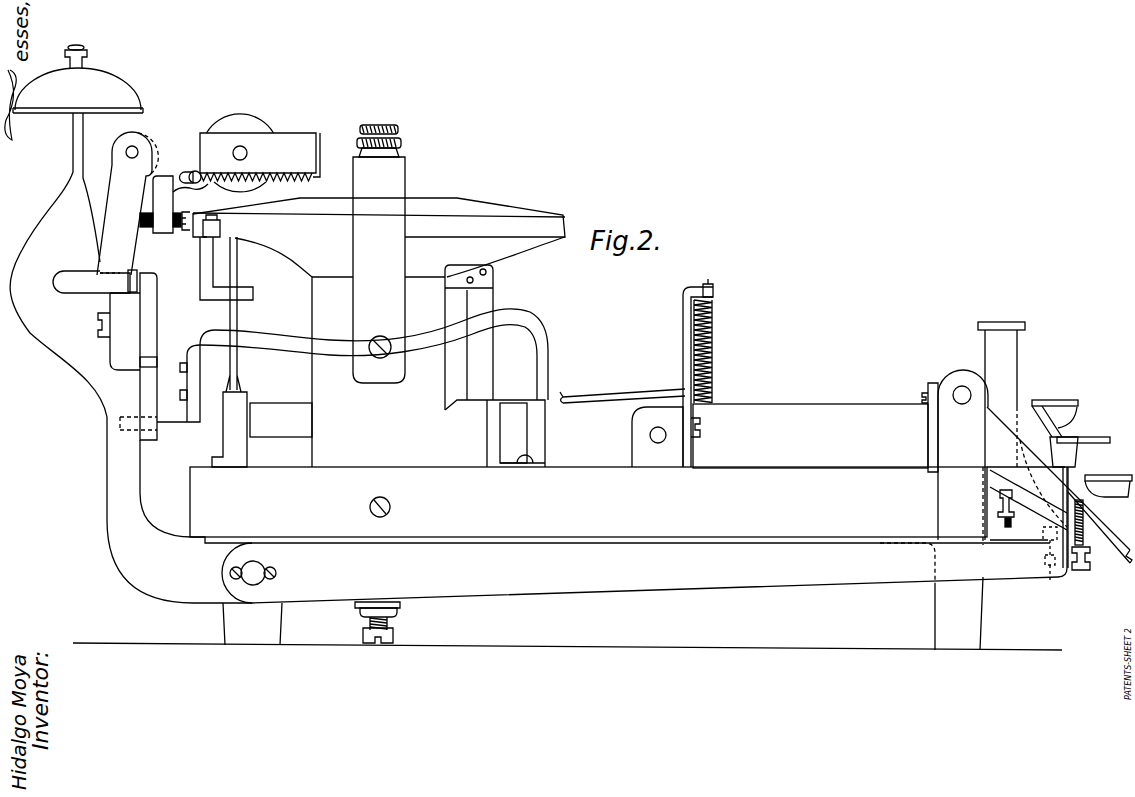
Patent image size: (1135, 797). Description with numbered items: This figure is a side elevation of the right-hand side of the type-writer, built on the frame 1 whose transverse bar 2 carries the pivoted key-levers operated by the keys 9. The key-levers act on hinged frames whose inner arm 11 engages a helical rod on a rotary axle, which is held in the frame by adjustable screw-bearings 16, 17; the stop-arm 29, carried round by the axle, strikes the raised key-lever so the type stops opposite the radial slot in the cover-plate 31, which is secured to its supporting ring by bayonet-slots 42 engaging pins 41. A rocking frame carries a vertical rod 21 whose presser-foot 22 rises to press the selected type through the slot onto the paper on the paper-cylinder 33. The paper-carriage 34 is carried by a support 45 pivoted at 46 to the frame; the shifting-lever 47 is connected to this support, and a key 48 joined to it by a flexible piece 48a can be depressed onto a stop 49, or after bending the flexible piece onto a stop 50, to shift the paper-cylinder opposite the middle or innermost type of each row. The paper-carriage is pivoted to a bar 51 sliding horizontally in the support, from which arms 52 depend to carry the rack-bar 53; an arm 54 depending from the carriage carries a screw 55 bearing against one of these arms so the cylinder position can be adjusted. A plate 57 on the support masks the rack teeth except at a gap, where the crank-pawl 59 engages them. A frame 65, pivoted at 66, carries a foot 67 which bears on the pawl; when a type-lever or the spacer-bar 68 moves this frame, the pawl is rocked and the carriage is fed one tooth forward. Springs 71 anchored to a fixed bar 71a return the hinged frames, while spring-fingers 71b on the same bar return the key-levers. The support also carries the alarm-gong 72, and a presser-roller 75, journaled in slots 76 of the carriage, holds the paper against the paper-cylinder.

The frame 1 is at (588, 502).
The transverse bar 2 is at (657, 427).
The keys 9 is at (1000, 326).
The arm 11 is at (478, 302).
The adjustable screw-bearing 16 is at (381, 607).
The adjustable screw-bearing 17 is at (382, 125).
The vertical rod 21 is at (239, 374).
The presser-foot 22 is at (240, 245).
The stop-arm 29 is at (280, 412).
The cover-plate 31 is at (538, 220).
The paper-cylinder 33 is at (250, 122).
The paper-carriage 34 is at (286, 148).
The pins 41 is at (186, 230).
The bayonet-slots 42 is at (221, 230).
The support 45 is at (147, 547).
The pivot 46 is at (257, 568).
The shifting-lever 47 is at (644, 558).
The key 48 is at (1090, 437).
The flexible piece 48a is at (996, 503).
The stop 49 is at (1088, 562).
The stop 50 is at (1050, 580).
The bar 51 is at (135, 148).
The arms 52 is at (112, 197).
The rack-bar 53 is at (110, 278).
The arm 54 is at (166, 215).
The screw 55 is at (147, 228).
The plate 57 is at (139, 281).
The crank-pawl 59 is at (158, 315).
The frame 65 is at (525, 324).
The pivot 66 is at (380, 358).
The foot 67 is at (175, 424).
The spacer-bar 68 is at (792, 420).
The springs 71 is at (713, 342).
The fixed bar 71a is at (712, 288).
The spring 71b is at (606, 395).
The alarm-gong 72 is at (93, 77).
The presser-roller 75 is at (197, 171).
The slots 76 is at (182, 171).